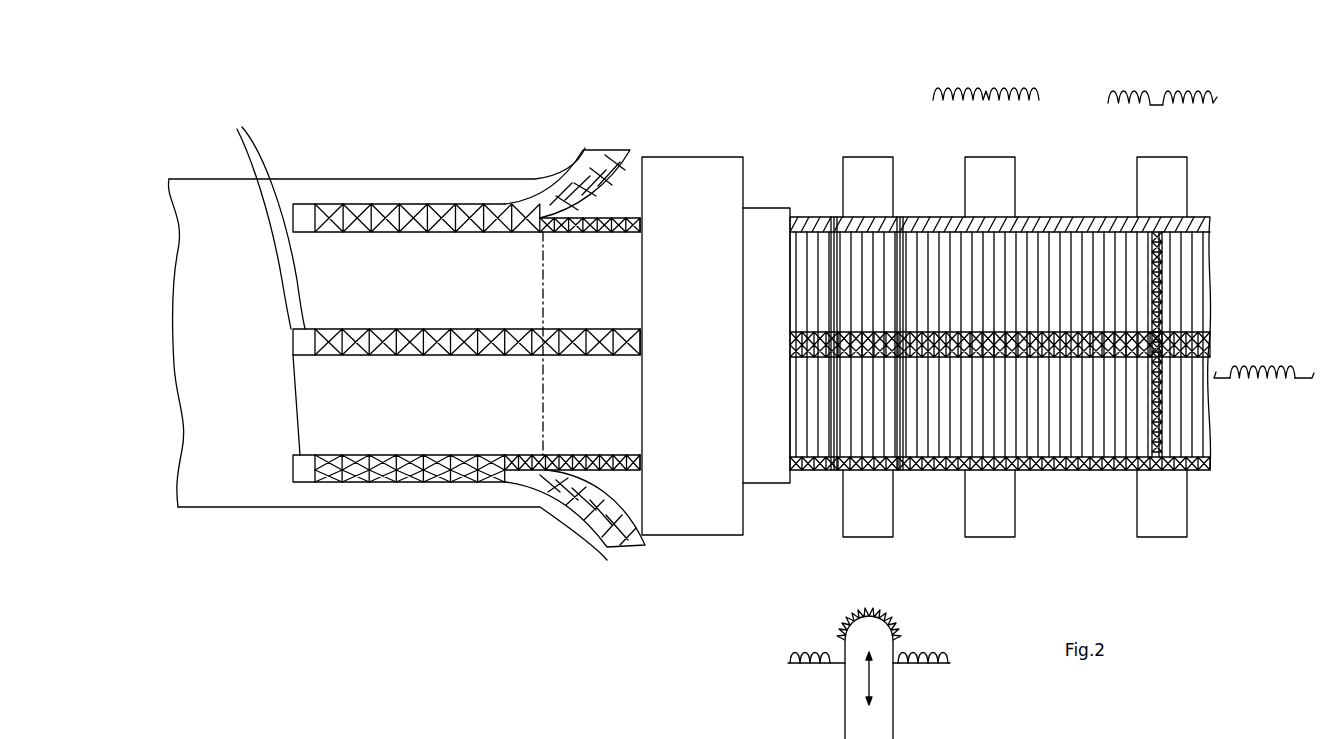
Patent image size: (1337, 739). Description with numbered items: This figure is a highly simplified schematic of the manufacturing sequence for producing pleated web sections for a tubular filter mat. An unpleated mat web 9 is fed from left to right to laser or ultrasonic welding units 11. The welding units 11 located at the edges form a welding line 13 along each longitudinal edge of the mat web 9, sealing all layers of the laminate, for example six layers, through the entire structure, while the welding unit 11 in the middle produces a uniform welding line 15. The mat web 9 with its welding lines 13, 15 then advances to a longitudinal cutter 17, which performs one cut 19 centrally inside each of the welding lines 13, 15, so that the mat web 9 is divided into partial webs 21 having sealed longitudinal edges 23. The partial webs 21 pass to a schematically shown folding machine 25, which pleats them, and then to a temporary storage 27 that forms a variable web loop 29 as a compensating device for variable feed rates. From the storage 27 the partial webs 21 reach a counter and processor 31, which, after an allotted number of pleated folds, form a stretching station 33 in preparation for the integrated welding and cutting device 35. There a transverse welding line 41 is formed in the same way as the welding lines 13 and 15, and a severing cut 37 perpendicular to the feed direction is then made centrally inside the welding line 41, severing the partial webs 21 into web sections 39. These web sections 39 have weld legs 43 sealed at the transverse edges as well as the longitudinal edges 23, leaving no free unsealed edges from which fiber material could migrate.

The mat web 9 is at (250, 457).
The laser or ultrasonic welding units 11 is at (259, 285).
The welding line 13 is at (408, 215).
The uniform welding line 15 is at (428, 330).
The longitudinal cutter 17 is at (537, 247).
The cut 19 is at (503, 458).
The partial webs 21 is at (1070, 546).
The sealed longitudinal edges 23 is at (609, 329).
The folding machine 25 is at (700, 170).
The temporary storage 27 is at (826, 678).
The variable web loop 29 is at (890, 625).
The counter and processor 31 is at (995, 165).
The stretching station 33 is at (986, 91).
The integrated welding and cutting device 35 is at (1175, 172).
The severing cut 37 is at (1160, 475).
The web sections 39 is at (1192, 265).
The transverse welding line 41 is at (1157, 272).
The weld legs 43 is at (1220, 372).